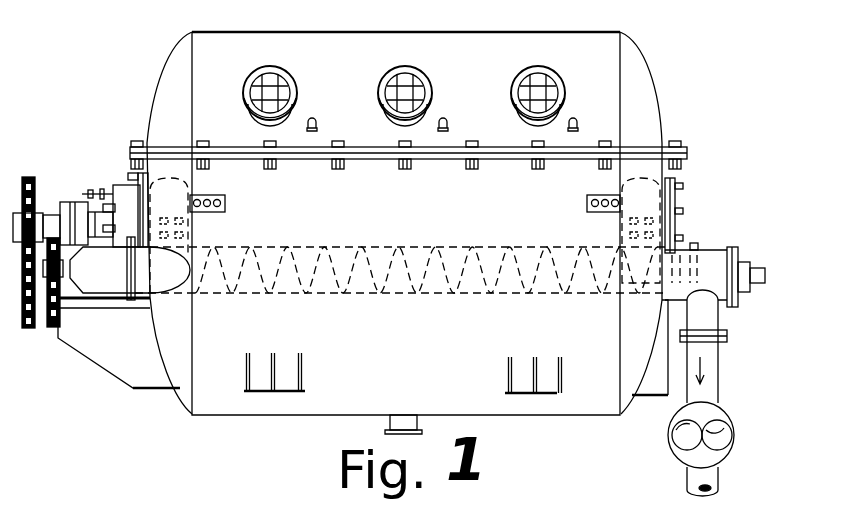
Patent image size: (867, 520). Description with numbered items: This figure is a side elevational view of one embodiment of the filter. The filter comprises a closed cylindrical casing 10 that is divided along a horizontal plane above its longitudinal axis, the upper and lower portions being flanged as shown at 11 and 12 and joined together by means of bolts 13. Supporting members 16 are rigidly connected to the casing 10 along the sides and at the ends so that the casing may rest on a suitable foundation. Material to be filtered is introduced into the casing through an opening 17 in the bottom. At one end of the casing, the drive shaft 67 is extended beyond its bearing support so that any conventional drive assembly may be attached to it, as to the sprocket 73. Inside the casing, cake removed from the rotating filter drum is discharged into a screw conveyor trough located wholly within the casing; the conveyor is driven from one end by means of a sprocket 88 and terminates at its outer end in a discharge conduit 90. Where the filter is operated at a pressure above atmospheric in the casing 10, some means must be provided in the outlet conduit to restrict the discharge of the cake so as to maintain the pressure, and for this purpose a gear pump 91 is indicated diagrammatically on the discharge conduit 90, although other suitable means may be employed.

The closed cylindrical casing 10 is at (590, 48).
The flange 11 is at (580, 150).
The flange 12 is at (586, 160).
The bolts 13 is at (608, 147).
The supporting members 16 is at (152, 393).
The opening 17 is at (390, 431).
The drive shaft 67 is at (48, 213).
The sprocket 73 is at (35, 177).
The sprocket 88 is at (44, 300).
The discharge conduit 90 is at (712, 321).
The gear pump 91 is at (708, 412).